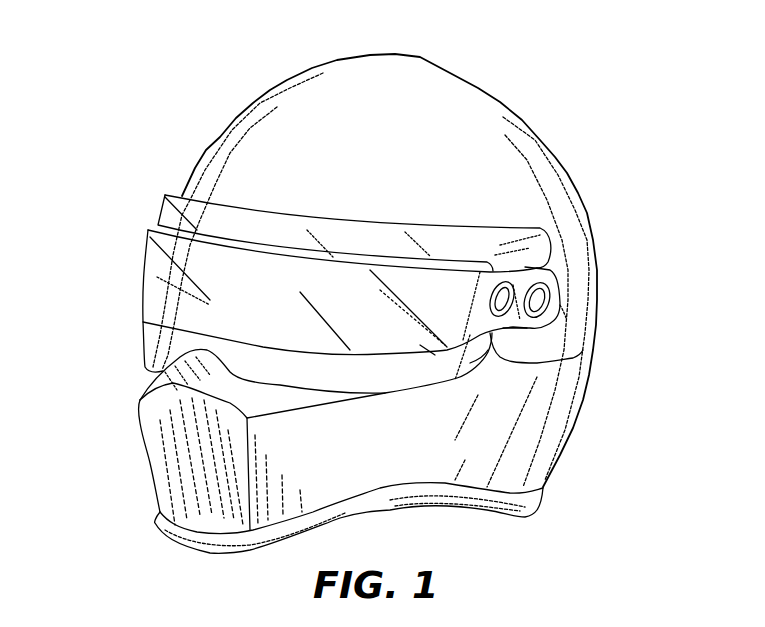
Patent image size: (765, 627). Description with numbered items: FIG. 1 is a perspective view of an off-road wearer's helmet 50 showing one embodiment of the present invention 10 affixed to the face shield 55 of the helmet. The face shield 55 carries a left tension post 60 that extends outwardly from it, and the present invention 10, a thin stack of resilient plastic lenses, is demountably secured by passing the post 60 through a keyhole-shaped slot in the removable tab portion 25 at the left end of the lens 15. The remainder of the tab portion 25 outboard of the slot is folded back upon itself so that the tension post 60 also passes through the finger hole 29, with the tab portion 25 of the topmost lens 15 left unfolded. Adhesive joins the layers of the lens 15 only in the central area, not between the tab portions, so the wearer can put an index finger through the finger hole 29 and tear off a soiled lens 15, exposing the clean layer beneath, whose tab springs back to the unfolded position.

The present invention 10 is at (141, 263).
The lens 15 is at (178, 303).
The removable tab portion 25 is at (558, 293).
The finger hole 29 is at (560, 312).
The helmet 50 is at (225, 72).
The face shield 55 is at (203, 210).
The tension post 60 is at (560, 361).